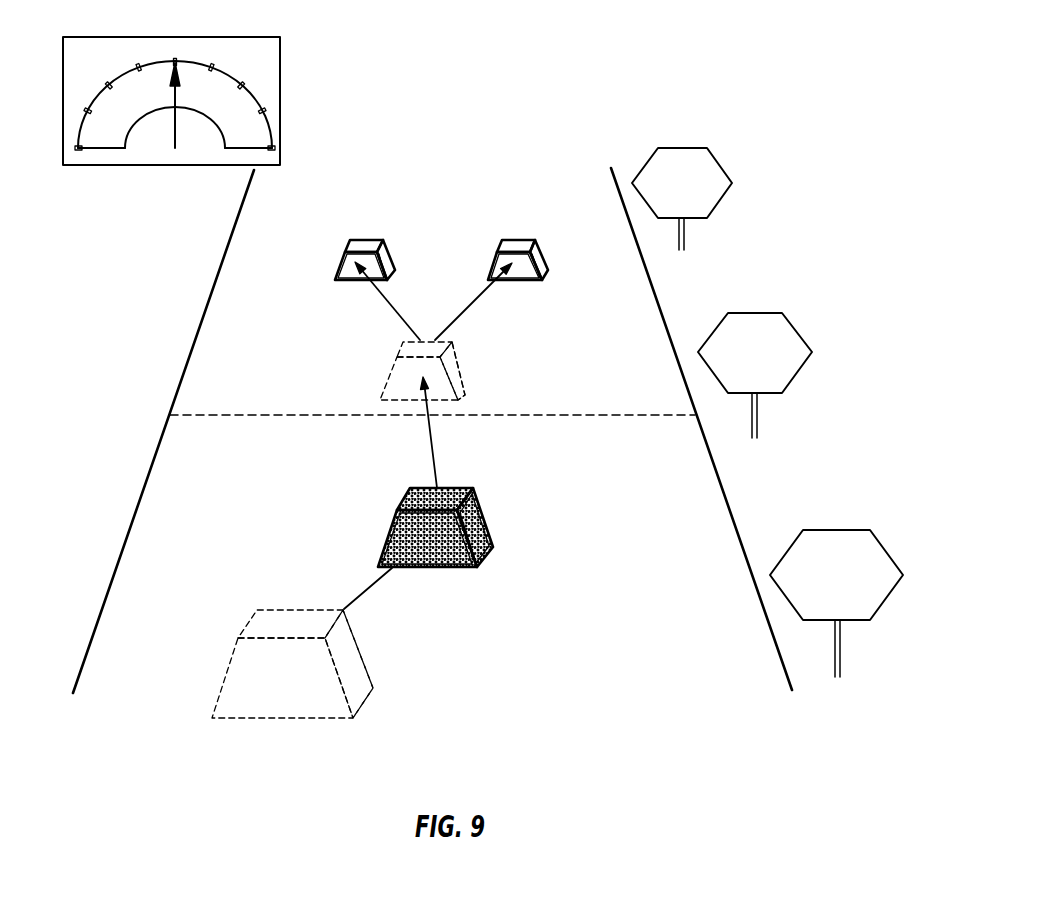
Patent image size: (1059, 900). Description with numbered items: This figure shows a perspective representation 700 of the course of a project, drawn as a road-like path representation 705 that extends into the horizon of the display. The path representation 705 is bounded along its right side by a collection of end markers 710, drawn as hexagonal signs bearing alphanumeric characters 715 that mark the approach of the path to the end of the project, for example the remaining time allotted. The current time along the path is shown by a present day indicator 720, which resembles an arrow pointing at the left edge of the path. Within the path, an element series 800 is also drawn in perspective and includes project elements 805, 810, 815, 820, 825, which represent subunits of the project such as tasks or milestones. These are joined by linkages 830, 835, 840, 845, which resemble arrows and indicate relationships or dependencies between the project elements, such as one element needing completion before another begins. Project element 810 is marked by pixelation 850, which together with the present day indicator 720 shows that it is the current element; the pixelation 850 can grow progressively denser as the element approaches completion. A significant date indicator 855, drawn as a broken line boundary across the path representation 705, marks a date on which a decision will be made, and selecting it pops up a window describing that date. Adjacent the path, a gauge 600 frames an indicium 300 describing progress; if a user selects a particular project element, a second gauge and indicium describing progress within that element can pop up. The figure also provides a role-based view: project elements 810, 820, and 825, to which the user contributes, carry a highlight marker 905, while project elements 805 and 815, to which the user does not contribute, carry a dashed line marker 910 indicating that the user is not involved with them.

The indicium 300 is at (175, 92).
The gauge 600 is at (267, 133).
The perspective representation 700 is at (684, 50).
The path representation 705 is at (730, 502).
The end markers 710 is at (725, 167).
The alphanumeric characters 715 is at (668, 155).
The present day indicator 720 is at (122, 522).
The element series 800 is at (537, 600).
The project element 805 is at (352, 658).
The project element 810 is at (487, 532).
The project element 815 is at (455, 373).
The project element 820 is at (390, 255).
The project element 825 is at (543, 253).
The linkage 830 is at (368, 588).
The linkage 835 is at (432, 457).
The linkage 840 is at (392, 309).
The linkage 845 is at (478, 297).
The pixelation 850 is at (487, 507).
The significant date indicator 855 is at (297, 413).
The highlight marker 905 is at (367, 238).
The dashed line marker 910 is at (460, 363).